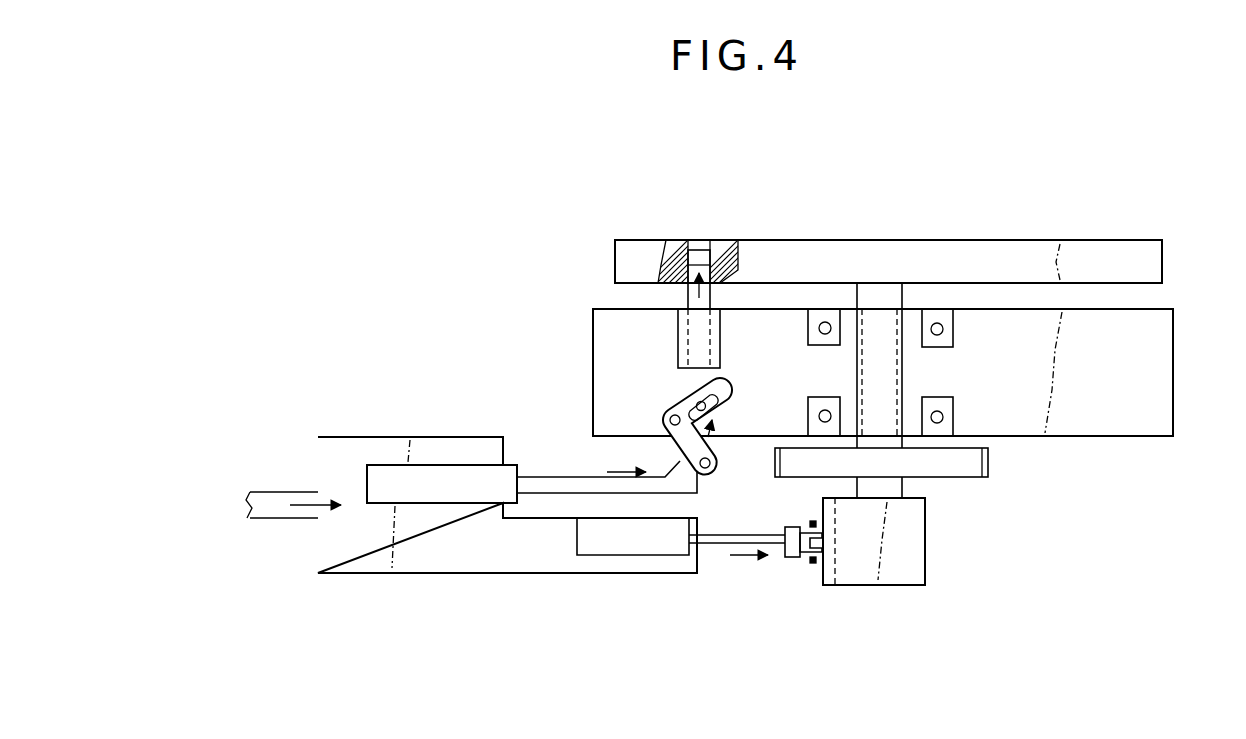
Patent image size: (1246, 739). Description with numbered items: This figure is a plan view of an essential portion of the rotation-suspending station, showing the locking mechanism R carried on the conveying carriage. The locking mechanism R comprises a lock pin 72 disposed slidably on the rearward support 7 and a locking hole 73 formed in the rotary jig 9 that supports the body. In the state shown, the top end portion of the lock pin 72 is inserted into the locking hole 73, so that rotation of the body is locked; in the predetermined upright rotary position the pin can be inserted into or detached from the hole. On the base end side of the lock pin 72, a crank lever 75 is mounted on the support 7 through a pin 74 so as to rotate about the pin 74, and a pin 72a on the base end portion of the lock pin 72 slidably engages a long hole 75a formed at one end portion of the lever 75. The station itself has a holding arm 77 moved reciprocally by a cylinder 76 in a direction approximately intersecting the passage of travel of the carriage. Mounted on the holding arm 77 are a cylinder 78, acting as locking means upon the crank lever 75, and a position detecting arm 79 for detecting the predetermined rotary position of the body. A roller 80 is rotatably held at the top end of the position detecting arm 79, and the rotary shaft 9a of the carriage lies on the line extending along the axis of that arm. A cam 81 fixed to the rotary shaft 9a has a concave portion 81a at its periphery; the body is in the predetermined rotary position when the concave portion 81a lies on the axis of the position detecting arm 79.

The rearward support 7 is at (1170, 390).
The rotary jig 9 is at (1158, 264).
The rotary shaft 9a is at (900, 362).
The lock pin 72 is at (688, 292).
The pin 72a is at (712, 410).
The locking hole 73 is at (697, 246).
The pin 74 is at (690, 450).
The crank lever 75 is at (670, 407).
The long hole 75a is at (710, 386).
The cylinder 76 is at (270, 490).
The holding arm 77 is at (403, 437).
The cylinder 78 is at (515, 465).
The position detecting arm 79 is at (712, 545).
The roller 80 is at (805, 556).
The cam 81 is at (922, 545).
The concave portion 81a is at (830, 585).
The locking mechanism R is at (658, 363).